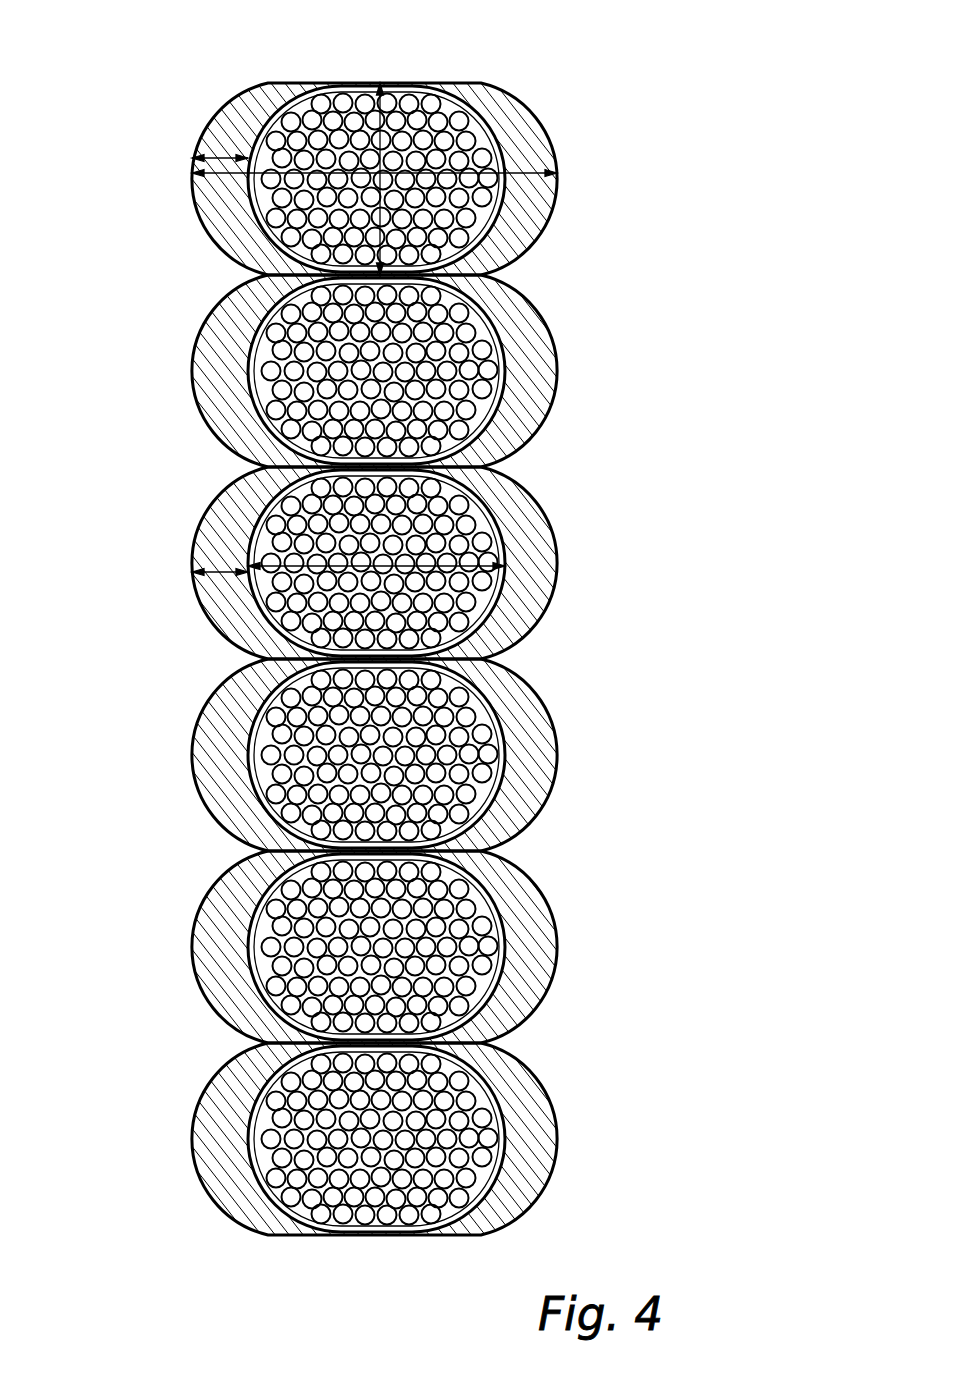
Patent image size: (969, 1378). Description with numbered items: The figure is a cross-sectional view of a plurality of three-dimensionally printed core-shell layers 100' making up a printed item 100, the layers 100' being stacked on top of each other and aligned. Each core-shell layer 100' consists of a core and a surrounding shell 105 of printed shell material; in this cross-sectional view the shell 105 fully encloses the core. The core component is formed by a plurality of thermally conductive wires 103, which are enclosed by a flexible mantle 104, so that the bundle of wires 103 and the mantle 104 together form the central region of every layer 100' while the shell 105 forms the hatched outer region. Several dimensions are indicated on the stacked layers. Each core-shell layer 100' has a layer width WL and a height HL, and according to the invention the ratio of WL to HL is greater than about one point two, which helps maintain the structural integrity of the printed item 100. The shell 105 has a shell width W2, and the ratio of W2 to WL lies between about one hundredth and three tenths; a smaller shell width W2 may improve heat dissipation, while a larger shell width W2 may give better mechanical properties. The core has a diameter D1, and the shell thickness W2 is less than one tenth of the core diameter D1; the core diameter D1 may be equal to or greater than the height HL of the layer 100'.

The 3D item 100 is at (484, 689).
The core-shell layer 100' is at (296, 467).
The thermally conductive wires 103 is at (283, 123).
The flexible mantle 104 is at (450, 97).
The shell 105 is at (527, 132).
The height of the core-shell layer HL is at (363, 120).
The layer width WL is at (520, 175).
The shell width W2 is at (208, 158).
The core diameter D1 is at (470, 566).